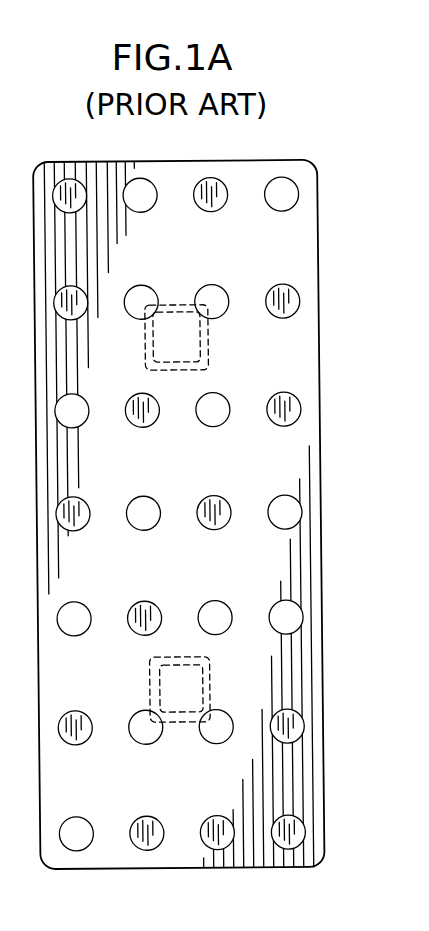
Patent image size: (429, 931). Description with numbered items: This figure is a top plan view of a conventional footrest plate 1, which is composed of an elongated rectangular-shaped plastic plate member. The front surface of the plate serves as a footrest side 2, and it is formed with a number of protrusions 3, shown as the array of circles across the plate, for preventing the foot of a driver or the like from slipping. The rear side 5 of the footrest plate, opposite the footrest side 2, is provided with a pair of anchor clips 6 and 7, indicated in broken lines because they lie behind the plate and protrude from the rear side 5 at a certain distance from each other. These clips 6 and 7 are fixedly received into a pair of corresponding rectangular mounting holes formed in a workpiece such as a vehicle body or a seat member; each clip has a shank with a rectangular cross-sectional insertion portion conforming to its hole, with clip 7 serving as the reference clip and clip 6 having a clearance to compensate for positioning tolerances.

The footrest plate 1 is at (336, 222).
The footrest side 2 is at (244, 352).
The protrusions 3 is at (213, 410).
The rear side 5 is at (237, 558).
The anchor clip 6 is at (178, 305).
The anchor clip 7 is at (178, 657).